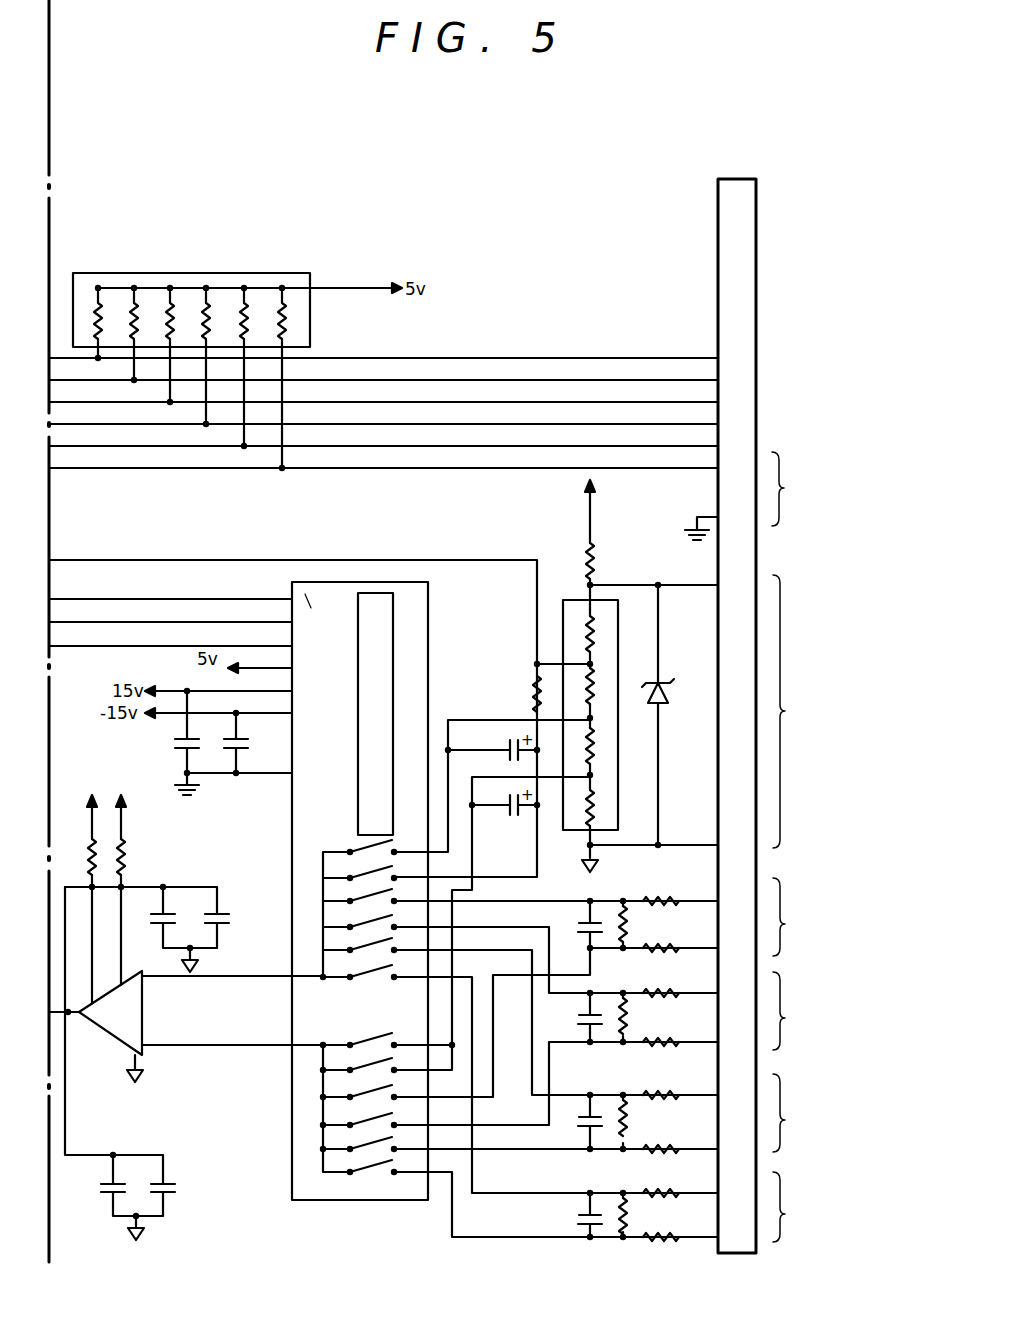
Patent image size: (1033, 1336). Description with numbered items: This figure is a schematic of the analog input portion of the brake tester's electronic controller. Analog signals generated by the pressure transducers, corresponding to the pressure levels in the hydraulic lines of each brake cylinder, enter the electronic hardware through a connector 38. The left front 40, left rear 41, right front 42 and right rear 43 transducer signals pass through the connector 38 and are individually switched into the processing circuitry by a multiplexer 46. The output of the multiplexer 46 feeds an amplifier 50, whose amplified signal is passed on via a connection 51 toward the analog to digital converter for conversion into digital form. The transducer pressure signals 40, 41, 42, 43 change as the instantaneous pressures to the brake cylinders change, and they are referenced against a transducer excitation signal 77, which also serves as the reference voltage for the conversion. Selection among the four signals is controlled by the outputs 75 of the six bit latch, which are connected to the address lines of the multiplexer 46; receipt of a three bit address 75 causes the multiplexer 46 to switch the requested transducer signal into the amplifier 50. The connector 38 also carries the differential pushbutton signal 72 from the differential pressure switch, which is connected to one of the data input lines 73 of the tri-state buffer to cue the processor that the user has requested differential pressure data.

The connector 38 is at (758, 181).
The data input lines 73 is at (535, 402).
The outputs of the six bit latch 75 is at (240, 646).
The multiplexer 46 is at (434, 619).
The differential pushbutton signal 72 is at (834, 490).
The transducer excitation signal 77 is at (725, 676).
The left front transducer signal 40 is at (656, 987).
The left rear transducer signal 41 is at (656, 1026).
The right front transducer signal 42 is at (656, 1054).
The right rear transducer signal 43 is at (656, 1111).
The amplifier 50 is at (144, 1056).
The connection 51 is at (71, 1016).